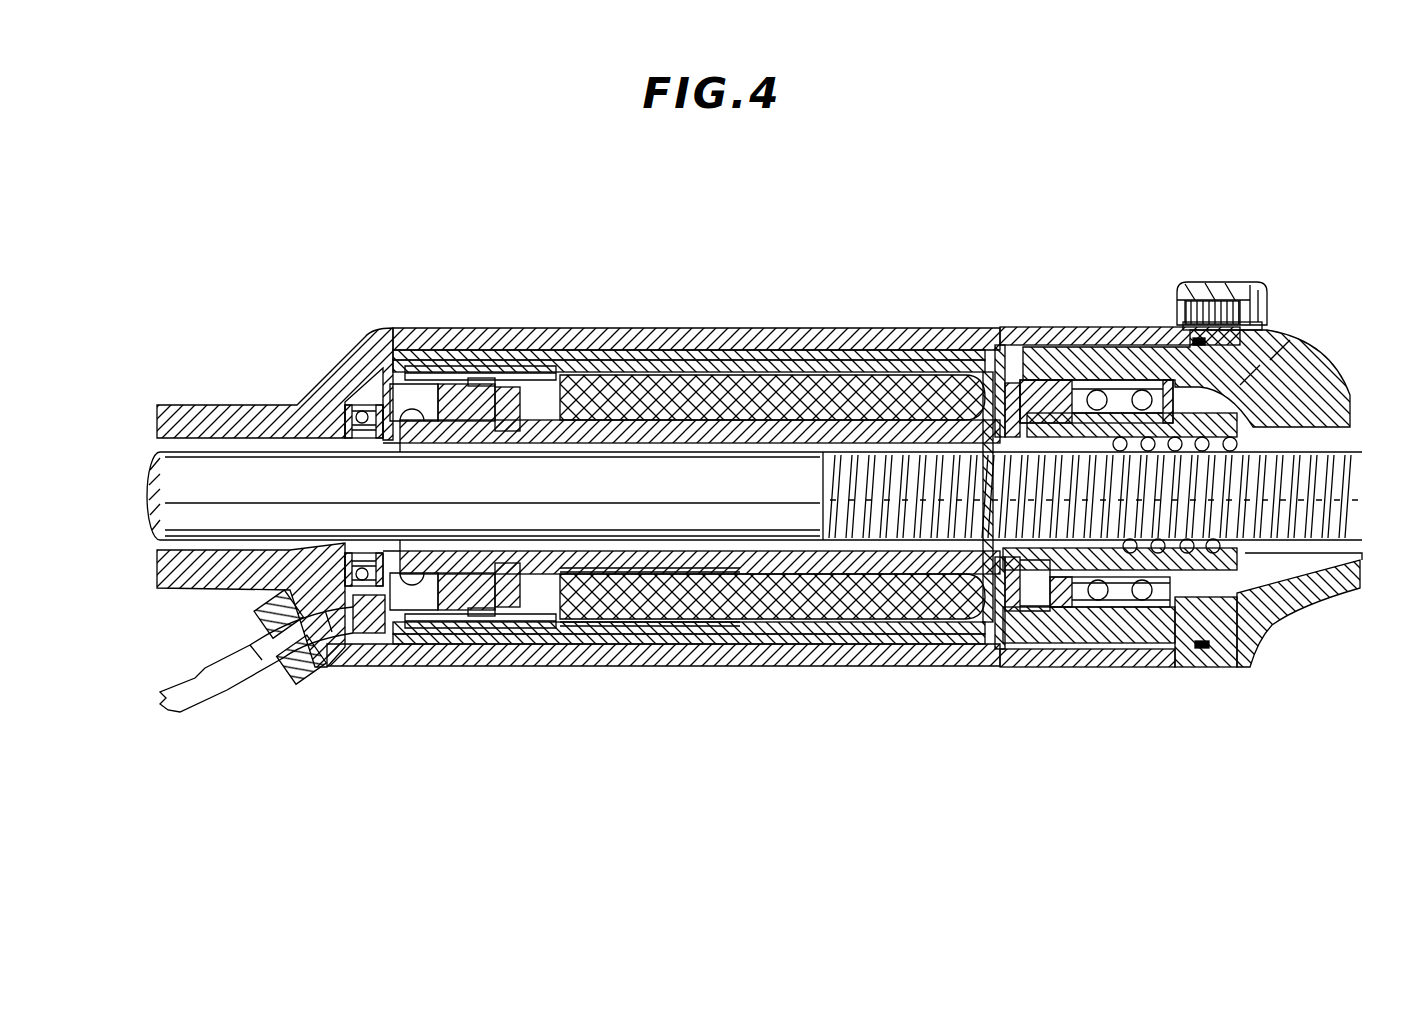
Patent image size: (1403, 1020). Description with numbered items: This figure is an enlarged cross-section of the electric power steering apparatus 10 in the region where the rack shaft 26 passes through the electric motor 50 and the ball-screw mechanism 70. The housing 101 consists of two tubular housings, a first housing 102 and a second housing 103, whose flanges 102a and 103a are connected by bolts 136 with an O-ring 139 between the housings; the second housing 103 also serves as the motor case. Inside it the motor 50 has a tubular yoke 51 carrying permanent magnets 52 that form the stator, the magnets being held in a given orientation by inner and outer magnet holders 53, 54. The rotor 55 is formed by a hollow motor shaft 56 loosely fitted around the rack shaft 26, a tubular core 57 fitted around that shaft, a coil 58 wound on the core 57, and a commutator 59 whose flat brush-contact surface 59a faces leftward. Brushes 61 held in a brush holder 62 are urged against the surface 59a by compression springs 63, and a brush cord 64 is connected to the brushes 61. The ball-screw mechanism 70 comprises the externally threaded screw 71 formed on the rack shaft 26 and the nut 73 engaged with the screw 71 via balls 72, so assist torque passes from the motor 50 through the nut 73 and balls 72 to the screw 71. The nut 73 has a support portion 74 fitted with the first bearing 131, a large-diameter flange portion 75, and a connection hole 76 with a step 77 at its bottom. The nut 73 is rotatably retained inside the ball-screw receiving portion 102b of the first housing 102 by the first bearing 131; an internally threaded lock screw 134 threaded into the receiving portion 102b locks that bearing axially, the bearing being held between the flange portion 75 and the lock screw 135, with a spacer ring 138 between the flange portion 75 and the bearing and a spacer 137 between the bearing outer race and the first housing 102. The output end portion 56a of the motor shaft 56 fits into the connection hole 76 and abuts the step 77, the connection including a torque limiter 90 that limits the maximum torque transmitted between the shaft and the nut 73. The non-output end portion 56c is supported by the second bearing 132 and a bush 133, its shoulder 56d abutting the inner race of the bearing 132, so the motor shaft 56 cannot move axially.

The linear actuator 10 is at (755, 447).
The rack shaft 26 is at (468, 470).
The electric motor 50 is at (895, 330).
The tubular yoke 51 is at (846, 352).
The permanent magnets 52 is at (822, 360).
The stator coil 53 is at (690, 372).
The outer magnet holder 54 is at (556, 368).
The rotor 55 is at (740, 778).
The motor shaft 56 is at (780, 560).
The output end portion 56a is at (935, 664).
The non-output end portion 56c is at (307, 423).
The shoulder 56d is at (385, 455).
The tubular core 57 is at (685, 572).
The coil 58 is at (603, 600).
The commutator 59 is at (513, 610).
The brush-contact surface 59a is at (480, 616).
The brushes 61 is at (452, 612).
The brush holder 62 is at (392, 635).
The compression springs 63 is at (408, 625).
The brush cord 64 is at (200, 700).
The ball-screw assembly 70 is at (1340, 620).
The screw 71 is at (1303, 552).
The balls 72 is at (1203, 648).
The nut 73 is at (1243, 565).
The support portion 74 is at (1100, 635).
The flange portion 75 is at (1207, 667).
The connection hole 76 is at (1000, 650).
The step 77 is at (1052, 640).
The torque limiter 90 is at (1030, 630).
The housing 101 is at (953, 150).
The first housing 102 is at (1190, 286).
The flange 102a is at (1245, 252).
The ball-screw receiving portion 102b is at (1096, 340).
The second housing 103 is at (948, 330).
The flange 103a is at (1196, 322).
The first bearing 131 is at (1112, 413).
The second bearing 132 is at (340, 408).
The bush 133 is at (373, 403).
The lock screw 134 is at (1099, 335).
The lock screw 135 is at (1023, 383).
The bolts 136 is at (1262, 320).
The spacer 137 is at (1147, 390).
The spacer ring 138 is at (1243, 380).
The O-ring 139 is at (1232, 368).